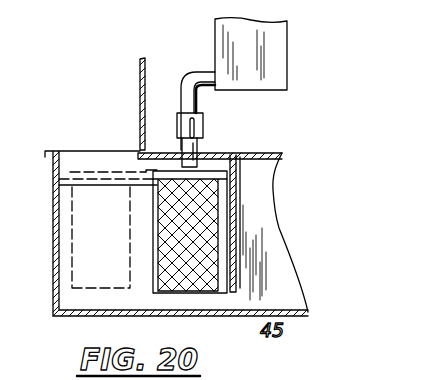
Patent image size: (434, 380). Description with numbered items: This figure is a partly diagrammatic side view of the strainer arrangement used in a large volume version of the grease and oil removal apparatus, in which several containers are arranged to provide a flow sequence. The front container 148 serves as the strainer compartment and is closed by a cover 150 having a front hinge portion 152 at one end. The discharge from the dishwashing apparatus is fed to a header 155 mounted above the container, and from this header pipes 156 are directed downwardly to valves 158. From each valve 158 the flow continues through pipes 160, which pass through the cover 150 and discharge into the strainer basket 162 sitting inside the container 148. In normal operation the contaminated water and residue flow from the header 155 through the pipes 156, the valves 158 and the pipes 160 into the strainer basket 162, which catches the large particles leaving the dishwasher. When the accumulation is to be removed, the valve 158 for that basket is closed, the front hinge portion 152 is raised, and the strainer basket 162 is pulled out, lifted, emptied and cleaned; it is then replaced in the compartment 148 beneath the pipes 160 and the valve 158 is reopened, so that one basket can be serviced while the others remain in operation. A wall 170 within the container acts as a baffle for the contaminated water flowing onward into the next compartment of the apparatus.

The front container 148 is at (55, 252).
The cover 150 is at (163, 148).
The front hinge portion 152 is at (139, 80).
The header 155 is at (228, 42).
The pipes 156 is at (199, 98).
The valves 158 is at (204, 126).
The pipes 160 is at (237, 170).
The strainer basket 162 is at (200, 223).
The wall 170 is at (235, 277).